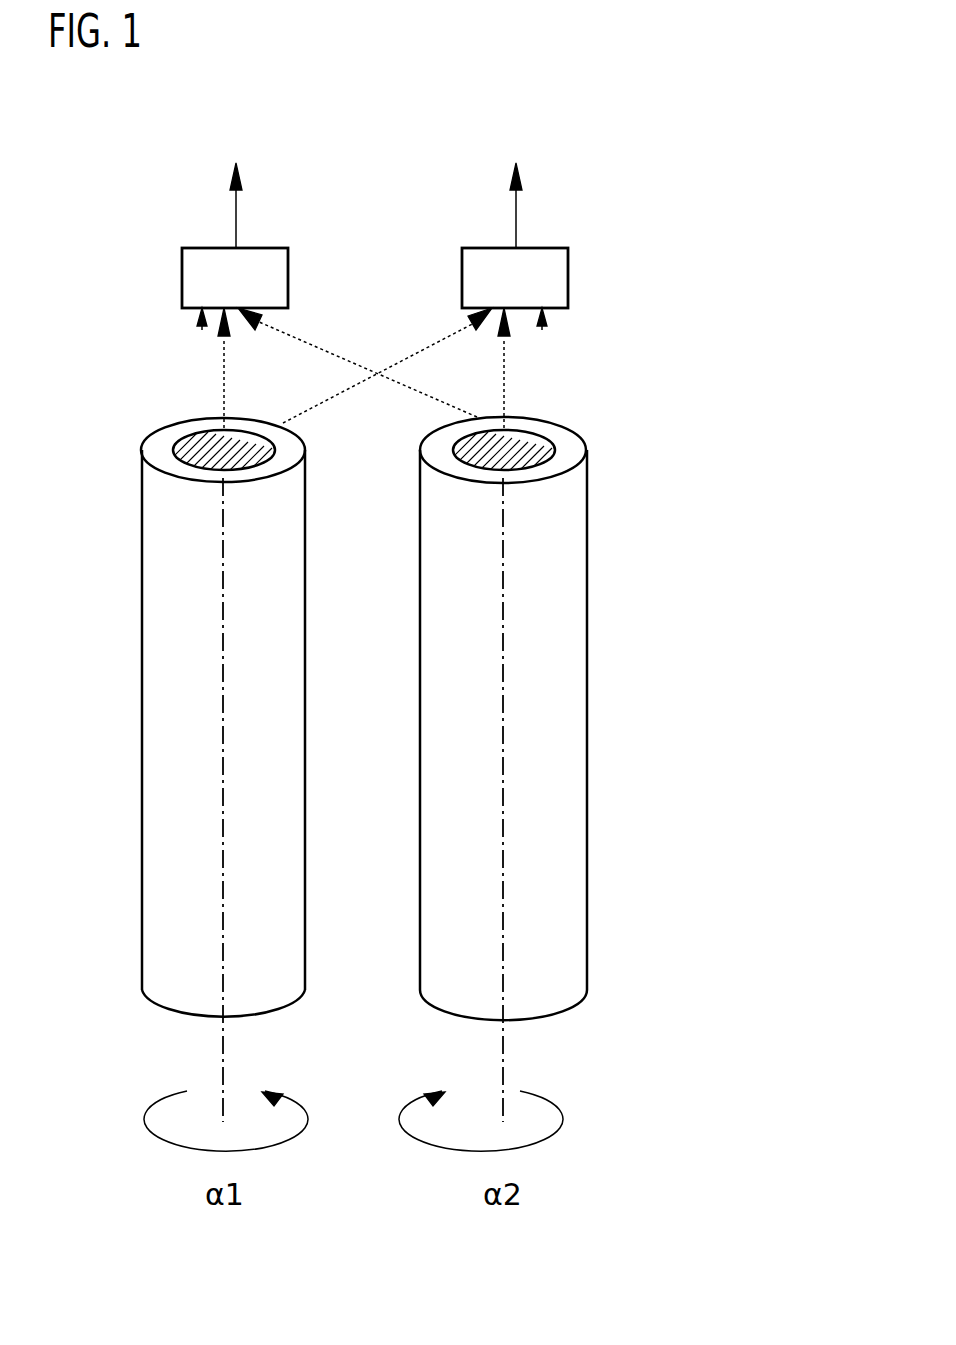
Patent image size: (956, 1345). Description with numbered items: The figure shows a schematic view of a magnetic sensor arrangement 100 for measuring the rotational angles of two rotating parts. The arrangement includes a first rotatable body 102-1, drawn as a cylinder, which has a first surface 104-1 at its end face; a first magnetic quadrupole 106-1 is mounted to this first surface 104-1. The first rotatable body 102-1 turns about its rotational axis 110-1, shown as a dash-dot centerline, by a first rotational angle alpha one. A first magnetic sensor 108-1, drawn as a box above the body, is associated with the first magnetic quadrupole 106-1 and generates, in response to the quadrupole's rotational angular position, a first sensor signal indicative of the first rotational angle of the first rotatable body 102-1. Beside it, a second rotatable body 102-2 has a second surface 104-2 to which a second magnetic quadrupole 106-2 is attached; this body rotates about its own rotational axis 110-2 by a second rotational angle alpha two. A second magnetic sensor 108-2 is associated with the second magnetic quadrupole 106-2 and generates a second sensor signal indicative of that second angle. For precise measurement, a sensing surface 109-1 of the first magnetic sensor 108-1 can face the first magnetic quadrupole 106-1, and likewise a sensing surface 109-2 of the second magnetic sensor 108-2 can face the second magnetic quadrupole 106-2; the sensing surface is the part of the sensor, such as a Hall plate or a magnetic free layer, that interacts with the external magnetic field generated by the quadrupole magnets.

The magnetic sensor arrangement 100 is at (573, 118).
The first rotatable body 102-1 is at (256, 855).
The second rotatable body 102-2 is at (536, 855).
The first surface 104-1 is at (181, 482).
The second surface 104-2 is at (588, 440).
The first magnetic quadrupole 106-1 is at (176, 447).
The second magnetic quadrupole 106-2 is at (456, 447).
The first magnetic sensor 108-1 is at (269, 292).
The second magnetic sensor 108-2 is at (549, 292).
The sensing surface of the first magnetic sensor 109-1 is at (202, 330).
The sensing surface of the second magnetic sensor 109-2 is at (542, 330).
The rotational axis of the first rotatable body 110-1 is at (229, 1047).
The rotational axis of the second rotatable body 110-2 is at (509, 1047).